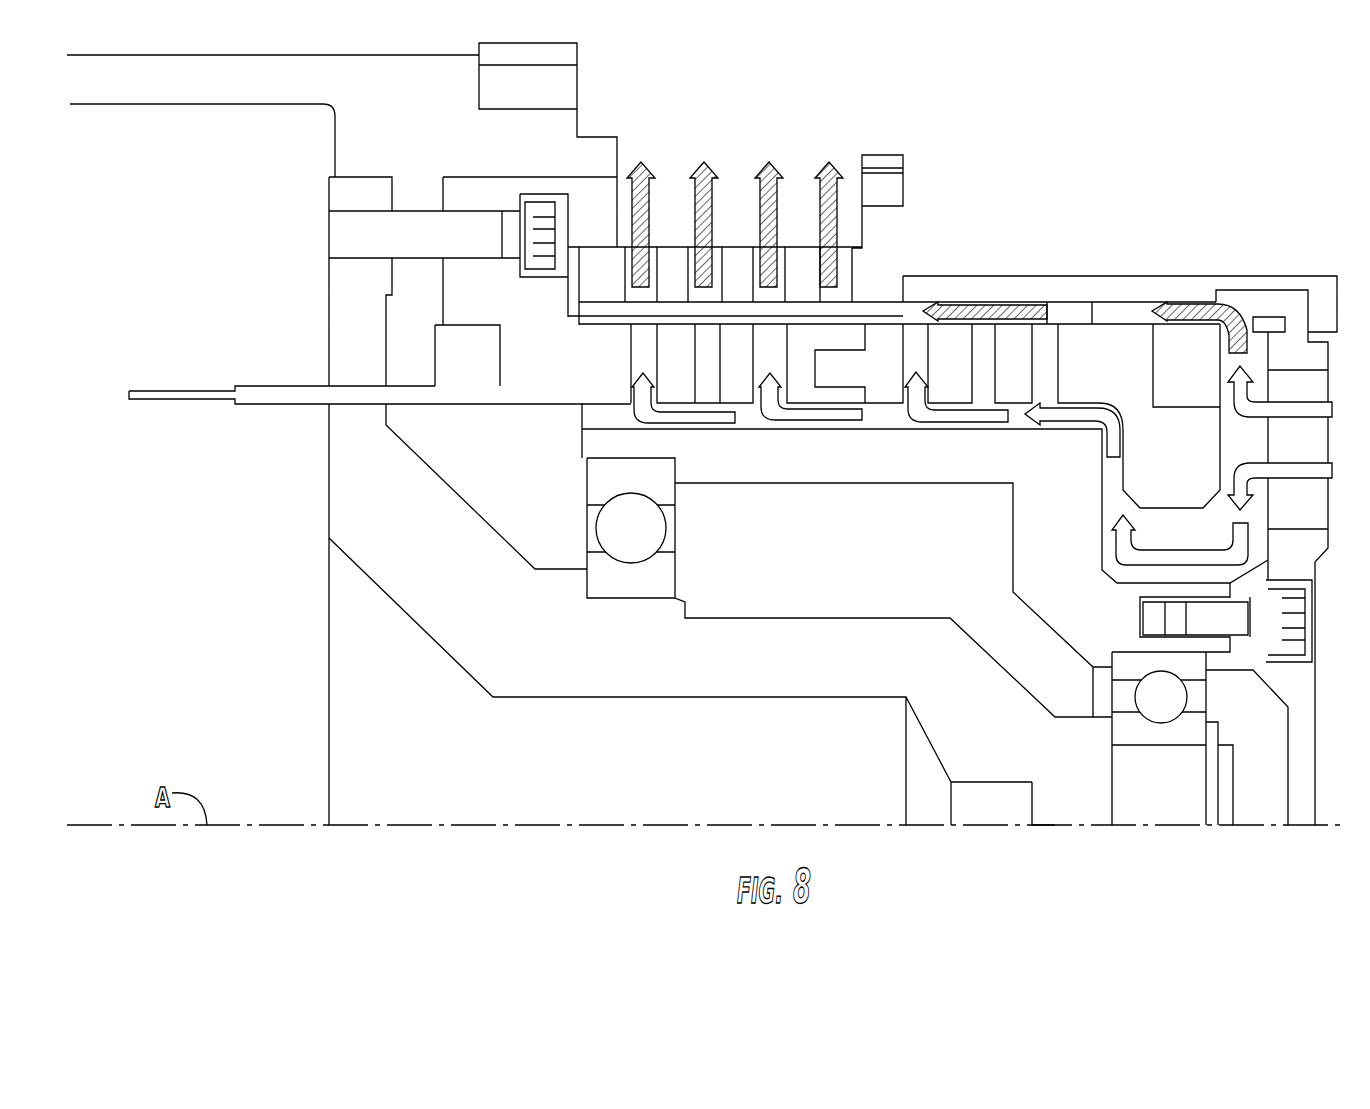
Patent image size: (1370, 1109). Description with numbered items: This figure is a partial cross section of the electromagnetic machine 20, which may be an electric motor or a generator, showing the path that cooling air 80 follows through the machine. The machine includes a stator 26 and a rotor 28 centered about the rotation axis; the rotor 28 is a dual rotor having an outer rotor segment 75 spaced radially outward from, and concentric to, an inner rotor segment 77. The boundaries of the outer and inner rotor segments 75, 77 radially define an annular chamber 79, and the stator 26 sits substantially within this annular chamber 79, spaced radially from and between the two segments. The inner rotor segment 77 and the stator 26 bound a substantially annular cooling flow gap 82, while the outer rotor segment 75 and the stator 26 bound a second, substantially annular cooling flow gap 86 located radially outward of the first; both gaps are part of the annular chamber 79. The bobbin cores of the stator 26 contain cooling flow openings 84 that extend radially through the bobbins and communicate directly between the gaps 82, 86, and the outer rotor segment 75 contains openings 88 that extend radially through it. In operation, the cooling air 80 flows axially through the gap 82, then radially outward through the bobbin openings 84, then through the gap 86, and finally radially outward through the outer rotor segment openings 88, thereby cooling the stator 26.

The electromagnetic machine 20 is at (717, 434).
The stator 26 is at (897, 323).
The rotor 28 is at (1098, 276).
The outer rotor segment 75 is at (798, 187).
The inner rotor segment 77 is at (887, 485).
The annular chamber 79 is at (883, 420).
The cooling air 80 is at (650, 198).
The cooling flow gap 82 is at (744, 418).
The cooling flow opening 84 is at (932, 352).
The cooling flow gap 86 is at (875, 311).
The openings 88 is at (757, 214).